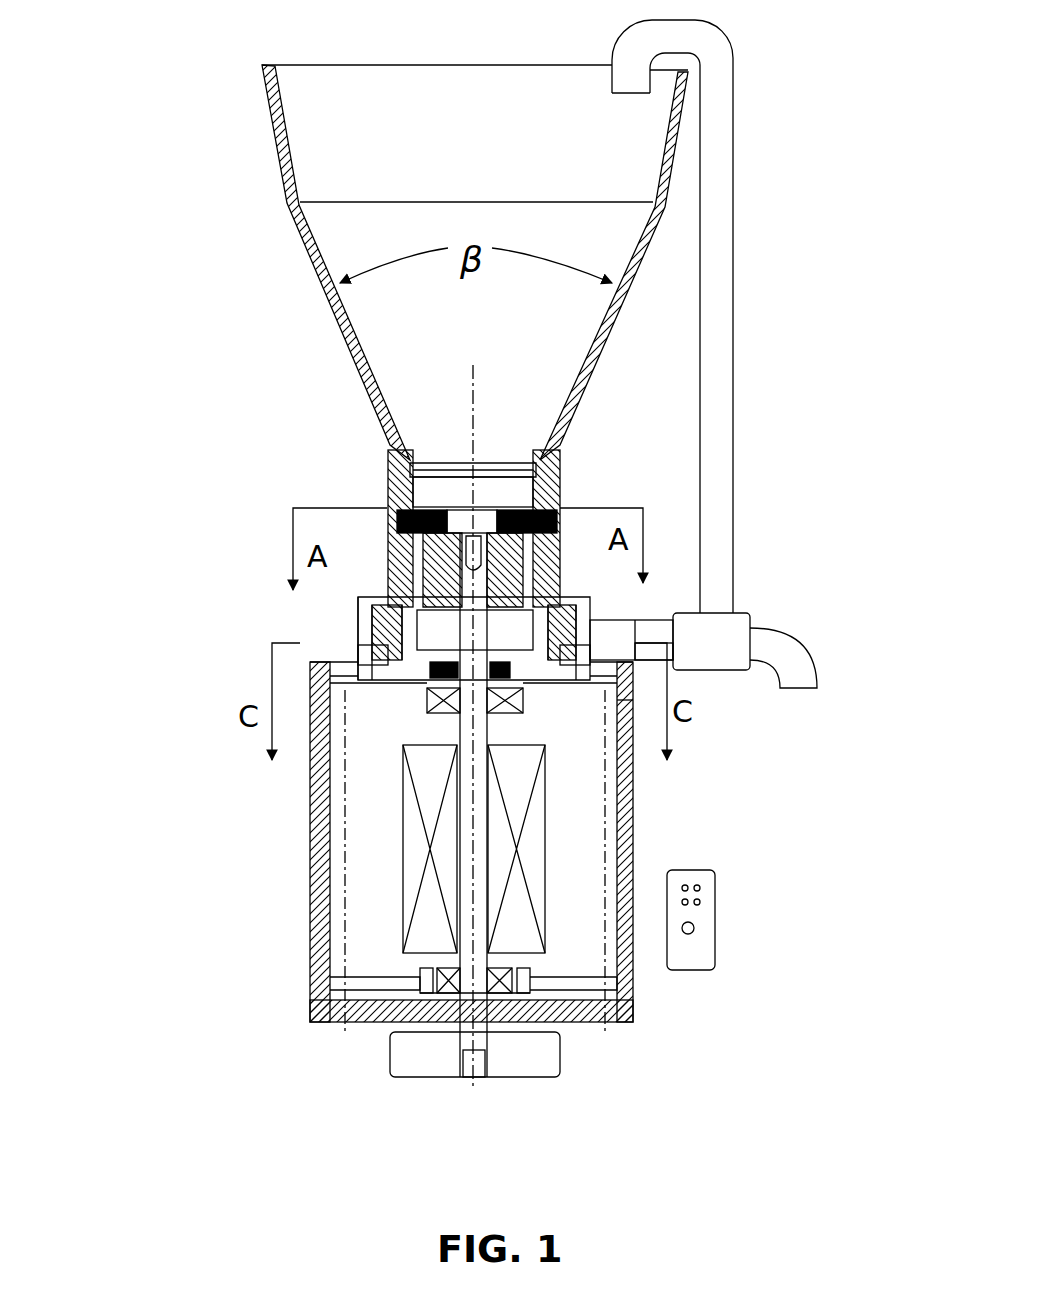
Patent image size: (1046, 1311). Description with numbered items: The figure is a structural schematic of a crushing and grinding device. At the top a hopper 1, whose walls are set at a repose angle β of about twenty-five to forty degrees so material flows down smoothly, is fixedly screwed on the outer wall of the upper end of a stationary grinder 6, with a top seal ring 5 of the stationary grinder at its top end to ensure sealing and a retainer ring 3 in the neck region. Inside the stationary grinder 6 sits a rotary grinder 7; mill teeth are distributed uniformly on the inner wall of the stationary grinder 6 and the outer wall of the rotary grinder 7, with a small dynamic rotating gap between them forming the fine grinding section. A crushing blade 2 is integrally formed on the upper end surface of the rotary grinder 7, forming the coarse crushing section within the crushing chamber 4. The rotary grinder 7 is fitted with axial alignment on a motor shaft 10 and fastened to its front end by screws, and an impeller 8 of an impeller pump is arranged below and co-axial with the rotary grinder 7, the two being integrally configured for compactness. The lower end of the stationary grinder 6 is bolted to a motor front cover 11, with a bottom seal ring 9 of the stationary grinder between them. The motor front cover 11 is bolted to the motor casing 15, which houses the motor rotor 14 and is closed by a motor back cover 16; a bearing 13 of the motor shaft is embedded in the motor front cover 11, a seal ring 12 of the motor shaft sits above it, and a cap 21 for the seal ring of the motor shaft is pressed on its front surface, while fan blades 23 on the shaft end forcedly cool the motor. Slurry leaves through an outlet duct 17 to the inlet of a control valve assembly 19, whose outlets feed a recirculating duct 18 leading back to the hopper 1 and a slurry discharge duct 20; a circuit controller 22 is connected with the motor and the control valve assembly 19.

The hopper 1 is at (392, 452).
The crushing blade 2 is at (500, 503).
The retainer ring 3 is at (453, 500).
The crushing chamber 4 is at (437, 590).
The top seal ring of the stationary grinder 5 is at (413, 607).
The stationary grinder 6 is at (455, 620).
The rotary grinder 7 is at (398, 638).
The impeller 8 is at (508, 630).
The bottom seal ring of the stationary grinder 9 is at (440, 678).
The motor shaft 10 is at (458, 650).
The motor front cover 11 is at (400, 684).
The seal ring of the motor shaft 12 is at (440, 680).
The bearing of the motor shaft 13 is at (325, 728).
The motor rotor 14 is at (430, 770).
The motor casing 15 is at (318, 860).
The motor back cover 16 is at (385, 1010).
The outlet duct 17 is at (717, 595).
The recirculating duct 18 is at (642, 632).
The control valve assembly 19 is at (725, 652).
The slurry discharge duct 20 is at (783, 650).
The cap for the seal ring of the motor shaft 21 is at (625, 712).
The circuit controller 22 is at (697, 947).
The fan blade 23 is at (535, 1060).